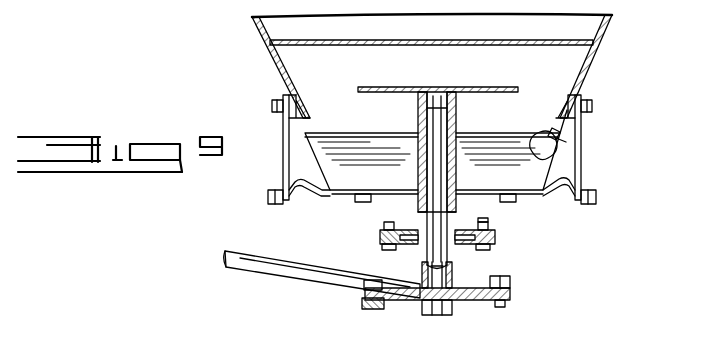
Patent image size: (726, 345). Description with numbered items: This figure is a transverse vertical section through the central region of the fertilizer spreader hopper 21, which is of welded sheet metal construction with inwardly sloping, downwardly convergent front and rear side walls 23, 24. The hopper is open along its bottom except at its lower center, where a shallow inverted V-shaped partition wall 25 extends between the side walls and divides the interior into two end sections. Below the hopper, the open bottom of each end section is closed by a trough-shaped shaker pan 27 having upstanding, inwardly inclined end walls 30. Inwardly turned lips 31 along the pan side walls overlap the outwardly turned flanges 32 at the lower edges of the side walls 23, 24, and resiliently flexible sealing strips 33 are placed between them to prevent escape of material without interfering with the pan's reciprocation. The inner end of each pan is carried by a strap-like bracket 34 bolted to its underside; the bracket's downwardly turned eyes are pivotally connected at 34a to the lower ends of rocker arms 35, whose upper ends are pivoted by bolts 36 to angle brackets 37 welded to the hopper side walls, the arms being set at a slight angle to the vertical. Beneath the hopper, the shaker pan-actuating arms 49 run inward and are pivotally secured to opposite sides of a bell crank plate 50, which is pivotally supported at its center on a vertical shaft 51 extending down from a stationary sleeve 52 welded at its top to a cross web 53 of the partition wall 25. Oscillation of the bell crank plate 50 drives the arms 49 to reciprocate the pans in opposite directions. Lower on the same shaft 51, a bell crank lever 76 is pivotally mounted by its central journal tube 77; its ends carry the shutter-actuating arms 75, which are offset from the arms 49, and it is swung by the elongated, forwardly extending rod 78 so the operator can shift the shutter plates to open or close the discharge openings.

The hopper 21 is at (248, 21).
The front side wall 23 is at (268, 36).
The rear side wall 24 is at (608, 20).
The partition wall 25 is at (478, 47).
The shaker pan 27 is at (530, 186).
The end wall 30 is at (338, 160).
The inwardly turned lip 31 is at (572, 132).
The outwardly turned flange 32 is at (548, 134).
The sealing strip 33 is at (568, 138).
The strap-like bracket 34 is at (346, 200).
The pivotal connection 34a is at (270, 197).
The rocker arm 35 is at (284, 130).
The bolt 36 is at (272, 106).
The angle bracket 37 is at (289, 95).
The shaker pan-actuating arm 49 is at (380, 238).
The bell crank plate 50 is at (500, 223).
The shaft 51 is at (432, 260).
The stationary sleeve 52 is at (418, 184).
The cross web 53 is at (400, 86).
The shutter-actuating arm 75 is at (360, 297).
The bell crank lever 76 is at (482, 300).
The journal tube 77 is at (456, 278).
The rod 78 is at (262, 250).